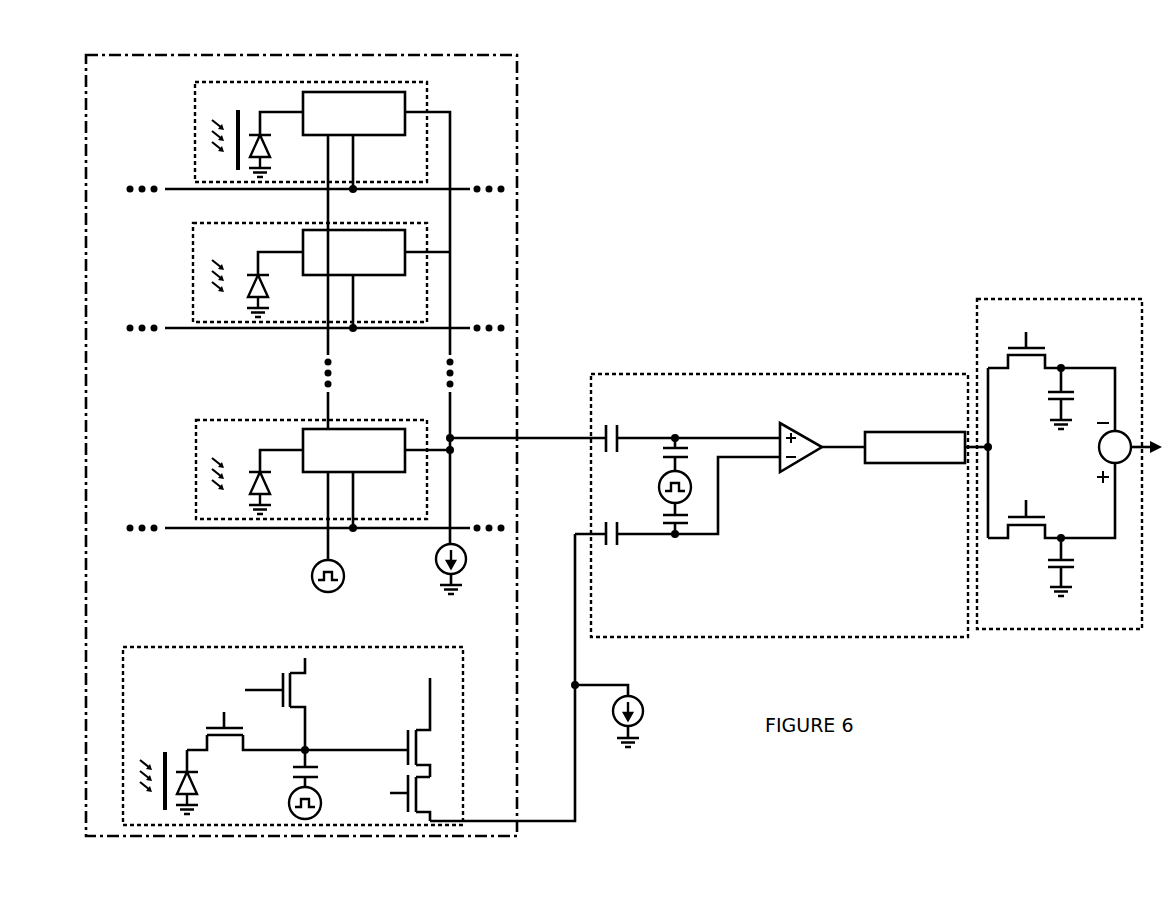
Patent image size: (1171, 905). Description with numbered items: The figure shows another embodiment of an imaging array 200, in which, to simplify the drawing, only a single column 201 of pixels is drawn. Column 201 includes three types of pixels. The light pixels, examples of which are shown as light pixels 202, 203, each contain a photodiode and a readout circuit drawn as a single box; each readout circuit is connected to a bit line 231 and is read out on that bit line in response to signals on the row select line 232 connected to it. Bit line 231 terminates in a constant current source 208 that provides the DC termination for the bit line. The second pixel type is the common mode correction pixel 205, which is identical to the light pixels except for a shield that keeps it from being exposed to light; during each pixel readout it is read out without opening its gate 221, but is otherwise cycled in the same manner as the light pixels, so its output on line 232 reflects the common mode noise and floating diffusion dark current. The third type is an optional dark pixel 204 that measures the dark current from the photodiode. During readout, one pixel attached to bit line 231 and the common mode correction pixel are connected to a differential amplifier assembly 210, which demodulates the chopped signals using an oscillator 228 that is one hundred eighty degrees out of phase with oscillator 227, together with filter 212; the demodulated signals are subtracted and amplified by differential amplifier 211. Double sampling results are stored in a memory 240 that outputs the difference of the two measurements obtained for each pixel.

The imaging array 200 is at (790, 122).
The column 201 is at (517, 85).
The light pixel 202 is at (193, 250).
The light pixel 203 is at (196, 475).
The dark pixel 204 is at (196, 117).
The common mode correction pixel 205 is at (172, 647).
The constant current source 208 is at (436, 560).
The differential amplifier assembly 210 is at (716, 374).
The differential amplifier 211 is at (797, 455).
The filter 212 is at (922, 465).
The gate 221 is at (207, 742).
The oscillator 227 is at (311, 576).
The oscillator 228 is at (660, 487).
The bit line 231 is at (450, 148).
The row select line 232 is at (170, 189).
The memory 240 is at (1050, 299).